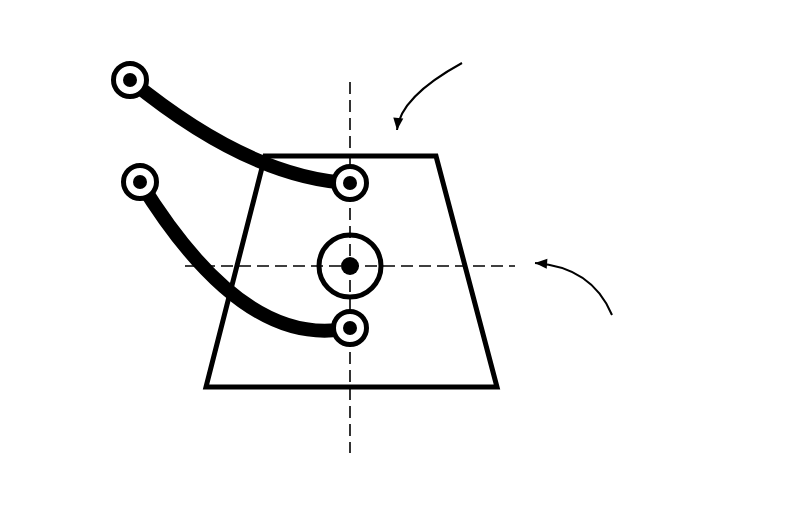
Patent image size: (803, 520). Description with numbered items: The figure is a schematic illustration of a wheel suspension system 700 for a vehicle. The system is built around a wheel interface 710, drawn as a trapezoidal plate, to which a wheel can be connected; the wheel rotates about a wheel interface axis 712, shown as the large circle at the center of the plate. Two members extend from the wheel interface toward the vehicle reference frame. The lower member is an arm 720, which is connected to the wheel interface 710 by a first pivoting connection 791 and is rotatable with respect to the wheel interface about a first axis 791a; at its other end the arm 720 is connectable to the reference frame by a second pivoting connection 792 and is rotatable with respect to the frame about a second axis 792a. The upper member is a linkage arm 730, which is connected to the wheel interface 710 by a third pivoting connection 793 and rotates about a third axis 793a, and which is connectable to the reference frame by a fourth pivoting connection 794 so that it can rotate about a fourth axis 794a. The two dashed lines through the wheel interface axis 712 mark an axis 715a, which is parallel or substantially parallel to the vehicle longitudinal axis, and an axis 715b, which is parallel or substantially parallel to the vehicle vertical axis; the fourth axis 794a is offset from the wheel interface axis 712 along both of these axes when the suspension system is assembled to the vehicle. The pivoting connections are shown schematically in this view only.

The wheel suspension system 700 is at (85, 26).
The wheel interface 710 is at (467, 376).
The wheel interface axis 712 is at (354, 272).
The axis 715a is at (487, 266).
The axis 715b is at (350, 83).
The arm 720 is at (204, 280).
The linkage arm 730 is at (230, 143).
The first pivoting connection 791 is at (352, 348).
The first axis 791a is at (345, 346).
The second pivoting connection 792 is at (125, 183).
The second axis 792a is at (139, 194).
The third pivoting connection 793 is at (364, 186).
The third axis 793a is at (338, 170).
The fourth pivoting connection 794 is at (150, 77).
The fourth axis 794a is at (113, 79).